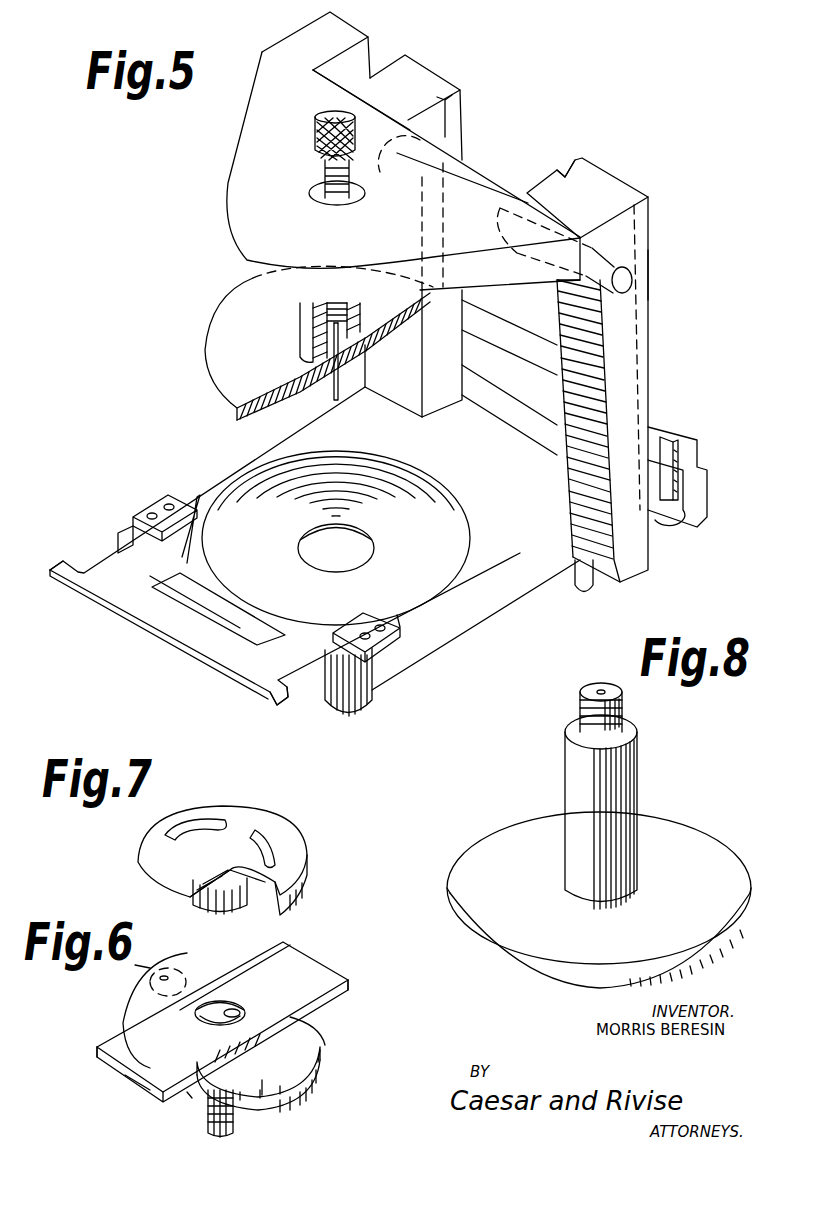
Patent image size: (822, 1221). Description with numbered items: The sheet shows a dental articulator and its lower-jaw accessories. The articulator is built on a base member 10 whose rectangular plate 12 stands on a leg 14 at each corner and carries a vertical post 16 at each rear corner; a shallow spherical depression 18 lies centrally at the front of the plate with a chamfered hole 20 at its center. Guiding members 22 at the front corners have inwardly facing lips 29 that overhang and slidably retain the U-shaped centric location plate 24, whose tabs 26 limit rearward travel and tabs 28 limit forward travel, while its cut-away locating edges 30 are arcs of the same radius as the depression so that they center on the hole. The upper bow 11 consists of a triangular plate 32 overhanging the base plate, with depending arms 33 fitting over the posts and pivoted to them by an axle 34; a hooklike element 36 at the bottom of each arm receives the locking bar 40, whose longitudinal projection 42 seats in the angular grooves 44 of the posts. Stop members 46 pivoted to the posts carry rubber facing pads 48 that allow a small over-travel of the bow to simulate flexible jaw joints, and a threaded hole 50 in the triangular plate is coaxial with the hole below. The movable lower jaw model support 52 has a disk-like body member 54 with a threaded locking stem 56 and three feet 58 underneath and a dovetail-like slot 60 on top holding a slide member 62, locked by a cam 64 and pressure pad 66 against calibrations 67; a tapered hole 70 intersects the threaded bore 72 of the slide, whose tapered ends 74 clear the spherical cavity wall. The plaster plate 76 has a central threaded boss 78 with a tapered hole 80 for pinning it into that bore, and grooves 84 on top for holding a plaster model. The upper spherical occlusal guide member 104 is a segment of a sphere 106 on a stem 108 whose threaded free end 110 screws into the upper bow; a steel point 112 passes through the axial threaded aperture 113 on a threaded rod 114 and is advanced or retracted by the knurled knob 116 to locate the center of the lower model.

In FIG. 5, the base member 10 is at (524, 599).
In FIG. 5, the upper bow 11 is at (216, 188).
In FIG. 5, the rectangular plate 12 is at (263, 454).
In FIG. 5, the leg 14 is at (369, 703).
In FIG. 5, the vertical post 16 is at (428, 80).
In FIG. 5, the spherical depression 18 is at (429, 487).
In FIG. 5, the hole 20 is at (363, 566).
In FIG. 5, the guiding member 22 is at (158, 504).
In FIG. 5, the centric location plate 24 is at (193, 646).
In FIG. 5, the tab 26 is at (61, 578).
In FIG. 5, the tab 28 is at (197, 496).
In FIG. 5, the inwardly facing lip 29 is at (125, 523).
In FIG. 5, the locating edge 30 is at (180, 553).
In FIG. 5, the triangular plate 32 is at (248, 216).
In FIG. 5, the depending arm 33 is at (642, 365).
In FIG. 5, the axle 34 is at (478, 179).
In FIG. 5, the hooklike element 36 is at (707, 502).
In FIG. 5, the locking bar 40 is at (502, 356).
In FIG. 5, the longitudinal projection 42 is at (474, 378).
In FIG. 5, the angular groove 44 is at (455, 119).
In FIG. 5, the stop member 46 is at (677, 437).
In FIG. 5, the rubber facing pad 48 is at (655, 432).
In FIG. 5, the threaded hole 50 is at (348, 208).
In FIG. 5, the movable lower jaw model support 52 is at (360, 62).
In FIG. 6, the movable lower jaw model support 52 is at (334, 1045).
In FIG. 6, the disk-like body member 54 is at (313, 1063).
In FIG. 6, the threaded locking stem 56 is at (234, 1126).
In FIG. 6, the feet 58 is at (299, 1083).
In FIG. 6, the slot 60 is at (293, 1012).
In FIG. 6, the slide member 62 is at (317, 960).
In FIG. 6, the cam 64 is at (164, 968).
In FIG. 6, the pressure pad 66 is at (232, 968).
In FIG. 6, the calibrations 67 is at (216, 1055).
In FIG. 6, the tapered hole 70 is at (241, 1012).
In FIG. 6, the cylindrically threaded bore 72 is at (206, 1018).
In FIG. 6, the tapered end 74 is at (341, 992).
In FIG. 7, the plaster plate 76 is at (302, 826).
In FIG. 7, the central threaded boss 78 is at (233, 911).
In FIG. 7, the tapered hole 80 is at (199, 909).
In FIG. 7, the grooves or indentations 84 is at (258, 830).
In FIG. 5, the upper spherical occlusal guide member 104 is at (219, 306).
In FIG. 8, the upper spherical occlusal guide member 104 is at (503, 967).
In FIG. 5, the segment of a sphere 106 is at (215, 345).
In FIG. 8, the segment of a sphere 106 is at (701, 835).
In FIG. 5, the stem or shank 108 is at (300, 330).
In FIG. 8, the stem or shank 108 is at (638, 765).
In FIG. 8, the distal free end 110 is at (580, 721).
In FIG. 5, the steel point 112 is at (323, 390).
In FIG. 5, the axial threaded aperture 113 is at (313, 323).
In FIG. 8, the axial threaded aperture 113 is at (601, 688).
In FIG. 5, the threaded rod 114 is at (322, 182).
In FIG. 5, the knurled knob 116 is at (317, 142).